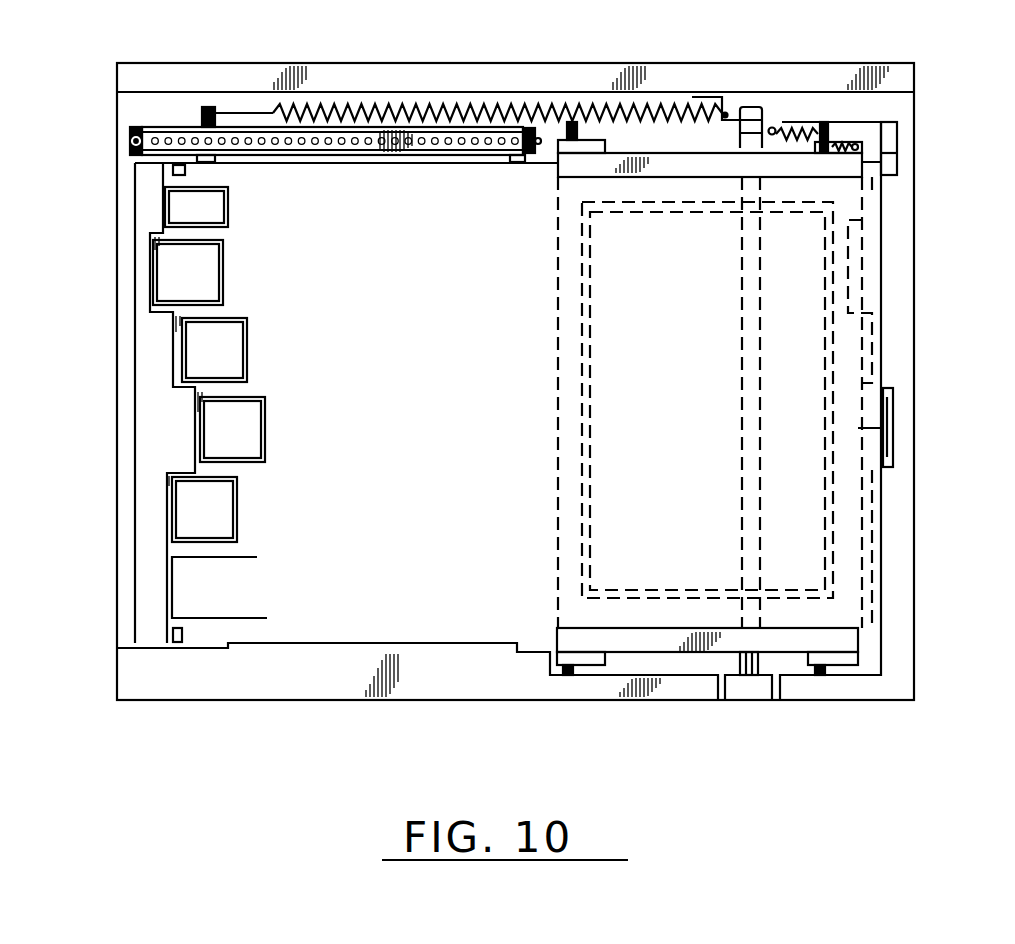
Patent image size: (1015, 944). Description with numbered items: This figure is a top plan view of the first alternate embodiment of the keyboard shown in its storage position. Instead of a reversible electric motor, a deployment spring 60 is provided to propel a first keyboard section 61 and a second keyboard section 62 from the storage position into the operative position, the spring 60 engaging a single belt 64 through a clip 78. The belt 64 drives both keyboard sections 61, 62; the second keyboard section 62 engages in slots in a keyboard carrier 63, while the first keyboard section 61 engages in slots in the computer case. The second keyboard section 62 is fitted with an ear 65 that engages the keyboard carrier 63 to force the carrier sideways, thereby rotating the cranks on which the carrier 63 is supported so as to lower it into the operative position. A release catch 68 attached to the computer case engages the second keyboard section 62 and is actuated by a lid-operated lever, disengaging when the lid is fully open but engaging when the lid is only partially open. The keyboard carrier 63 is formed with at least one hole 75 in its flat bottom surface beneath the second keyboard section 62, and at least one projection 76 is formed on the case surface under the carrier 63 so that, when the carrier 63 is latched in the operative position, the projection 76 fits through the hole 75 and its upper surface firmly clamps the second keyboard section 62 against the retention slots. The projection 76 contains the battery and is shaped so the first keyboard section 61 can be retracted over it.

The spring 60 is at (497, 113).
The first keyboard section 61 is at (150, 393).
The second keyboard section 62 is at (843, 207).
The keyboard carrier 63 is at (657, 642).
The belt 64 is at (327, 137).
The ear 65 is at (173, 172).
The release catch 68 is at (897, 162).
The hole 75 is at (580, 568).
The projection 76 is at (590, 383).
The clip 78 is at (211, 110).